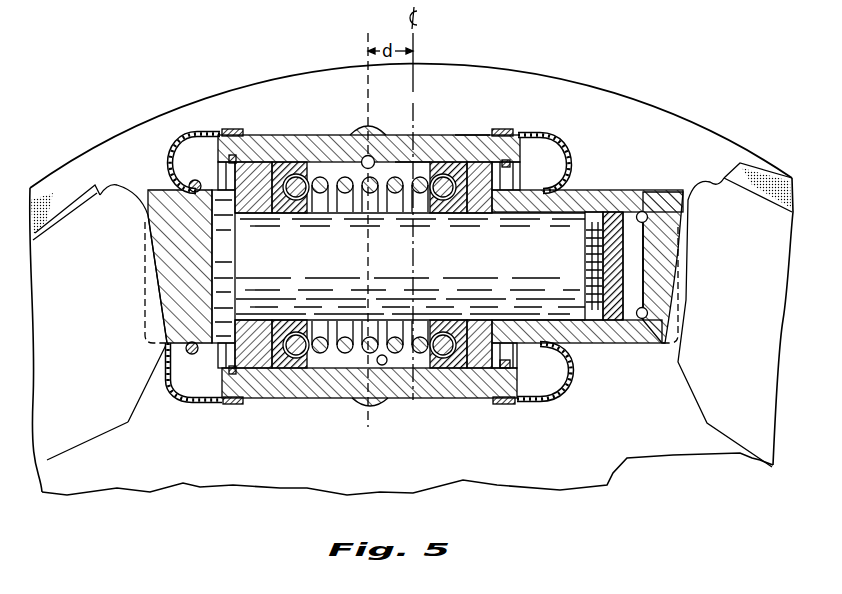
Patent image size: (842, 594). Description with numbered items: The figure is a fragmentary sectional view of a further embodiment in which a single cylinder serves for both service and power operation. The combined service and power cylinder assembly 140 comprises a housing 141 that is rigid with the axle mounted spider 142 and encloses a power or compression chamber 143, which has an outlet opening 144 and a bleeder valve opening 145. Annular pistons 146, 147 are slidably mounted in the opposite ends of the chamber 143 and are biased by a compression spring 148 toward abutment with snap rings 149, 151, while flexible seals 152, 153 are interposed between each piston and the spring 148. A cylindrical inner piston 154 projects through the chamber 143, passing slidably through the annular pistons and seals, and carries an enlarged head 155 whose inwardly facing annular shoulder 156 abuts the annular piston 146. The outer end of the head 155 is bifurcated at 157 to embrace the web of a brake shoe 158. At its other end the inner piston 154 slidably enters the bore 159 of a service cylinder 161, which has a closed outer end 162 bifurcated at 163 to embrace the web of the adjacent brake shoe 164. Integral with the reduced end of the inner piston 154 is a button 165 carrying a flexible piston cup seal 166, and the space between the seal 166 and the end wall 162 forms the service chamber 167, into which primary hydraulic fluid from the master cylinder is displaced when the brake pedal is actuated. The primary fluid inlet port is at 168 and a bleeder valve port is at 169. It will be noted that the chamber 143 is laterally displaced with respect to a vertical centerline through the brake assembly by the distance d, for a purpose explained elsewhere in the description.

The combined service and power cylinder assembly 140 is at (483, 112).
The housing 141 is at (281, 134).
The axle mounted spider 142 is at (563, 84).
The power or compression chamber 143 is at (412, 165).
The outlet opening 144 is at (383, 365).
The bleeder valve opening 145 is at (399, 116).
The annular piston 146 is at (259, 399).
The annular piston 147 is at (478, 372).
The compression spring 148 is at (345, 358).
The snap ring 149 is at (236, 375).
The snap ring 151 is at (506, 378).
The flexible seal 152 is at (290, 366).
The flexible seal 153 is at (457, 396).
The cylindrical inner piston 154 is at (580, 344).
The enlarged head 155 is at (163, 190).
The annular shoulder 156 is at (239, 218).
The bifurcated end 157 is at (153, 358).
The brake shoe 158 is at (127, 416).
The bore 159 is at (571, 212).
The service cylinder 161 is at (572, 191).
The closed outer end 162 is at (660, 237).
The bifurcated end 163 is at (684, 192).
The brake shoe 164 is at (690, 371).
The button 165 is at (603, 273).
The flexible piston cup seal 166 is at (592, 236).
The service chamber 167 is at (637, 275).
The primary fluid inlet port 168 is at (648, 313).
The bleeder valve port 169 is at (643, 211).